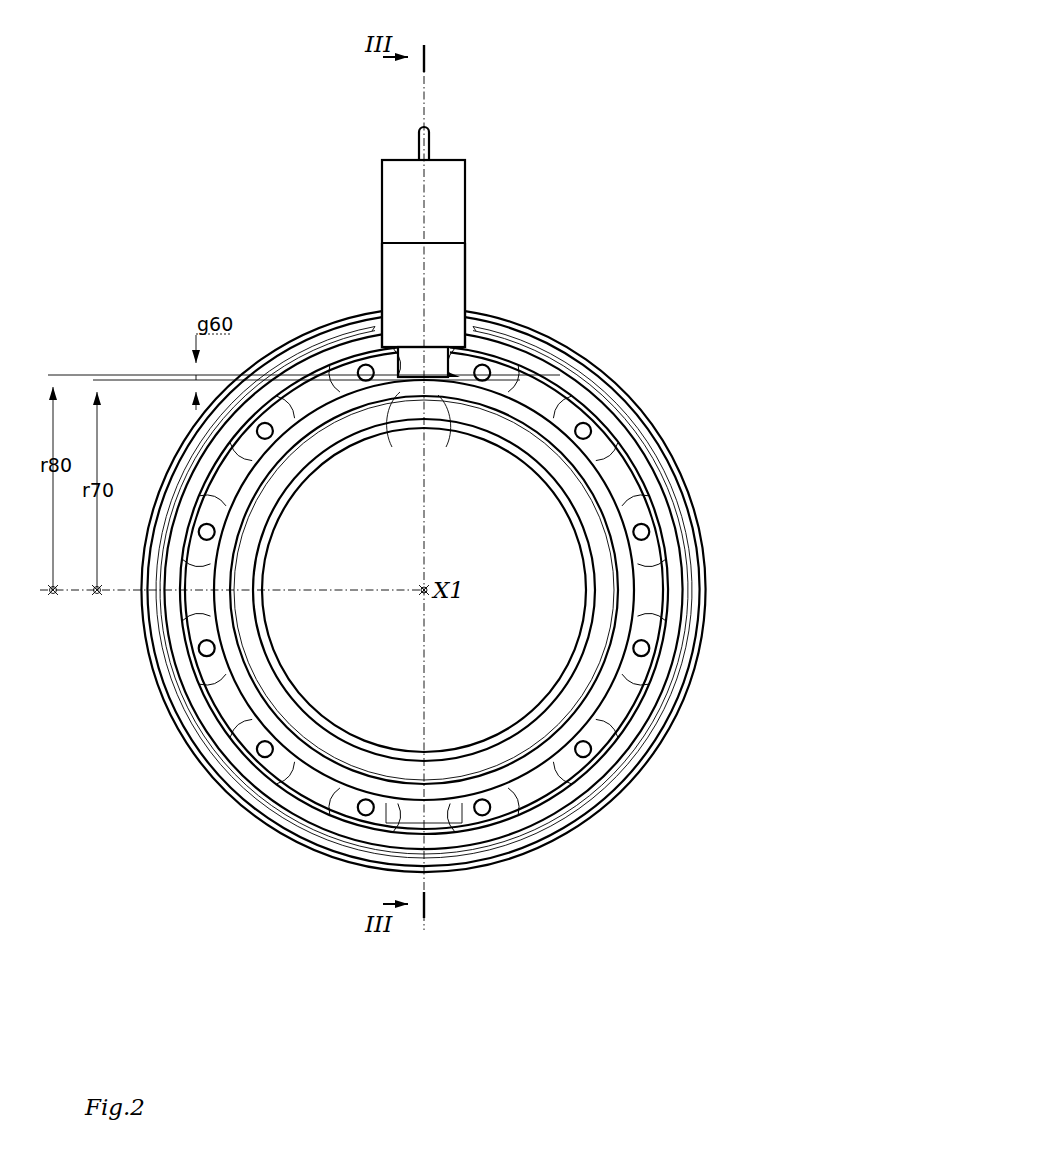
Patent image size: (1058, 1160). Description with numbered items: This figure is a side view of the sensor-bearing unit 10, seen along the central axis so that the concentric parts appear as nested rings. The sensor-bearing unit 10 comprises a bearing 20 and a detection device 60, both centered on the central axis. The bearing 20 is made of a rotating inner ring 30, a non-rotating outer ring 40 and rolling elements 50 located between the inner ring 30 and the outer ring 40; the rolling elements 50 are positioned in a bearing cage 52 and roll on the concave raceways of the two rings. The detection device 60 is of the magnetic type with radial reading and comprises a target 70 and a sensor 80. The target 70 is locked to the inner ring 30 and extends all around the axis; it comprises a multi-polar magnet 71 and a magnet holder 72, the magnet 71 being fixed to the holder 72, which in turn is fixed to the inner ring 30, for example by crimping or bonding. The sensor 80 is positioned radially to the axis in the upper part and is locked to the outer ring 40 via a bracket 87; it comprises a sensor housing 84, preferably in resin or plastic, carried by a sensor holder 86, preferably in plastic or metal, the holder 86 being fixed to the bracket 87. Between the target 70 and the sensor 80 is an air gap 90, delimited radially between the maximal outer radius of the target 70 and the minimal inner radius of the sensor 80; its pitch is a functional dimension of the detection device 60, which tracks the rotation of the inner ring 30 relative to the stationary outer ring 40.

The sensor-bearing unit 10 is at (260, 186).
The bearing 20 is at (659, 885).
The inner ring 30 is at (603, 607).
The outer ring 40 is at (648, 755).
The rolling elements 50 is at (620, 697).
The bearing cage 52 is at (650, 647).
The detection device 60 is at (645, 101).
The target 70 is at (420, 450).
The multi-polar magnet 71 is at (403, 434).
The magnet holder 72 is at (438, 435).
The sensor 80 is at (572, 245).
The sensor housing 84 is at (445, 207).
The sensor holder 86 is at (450, 281).
The bracket 87 is at (647, 425).
The air gap 90 is at (500, 372).